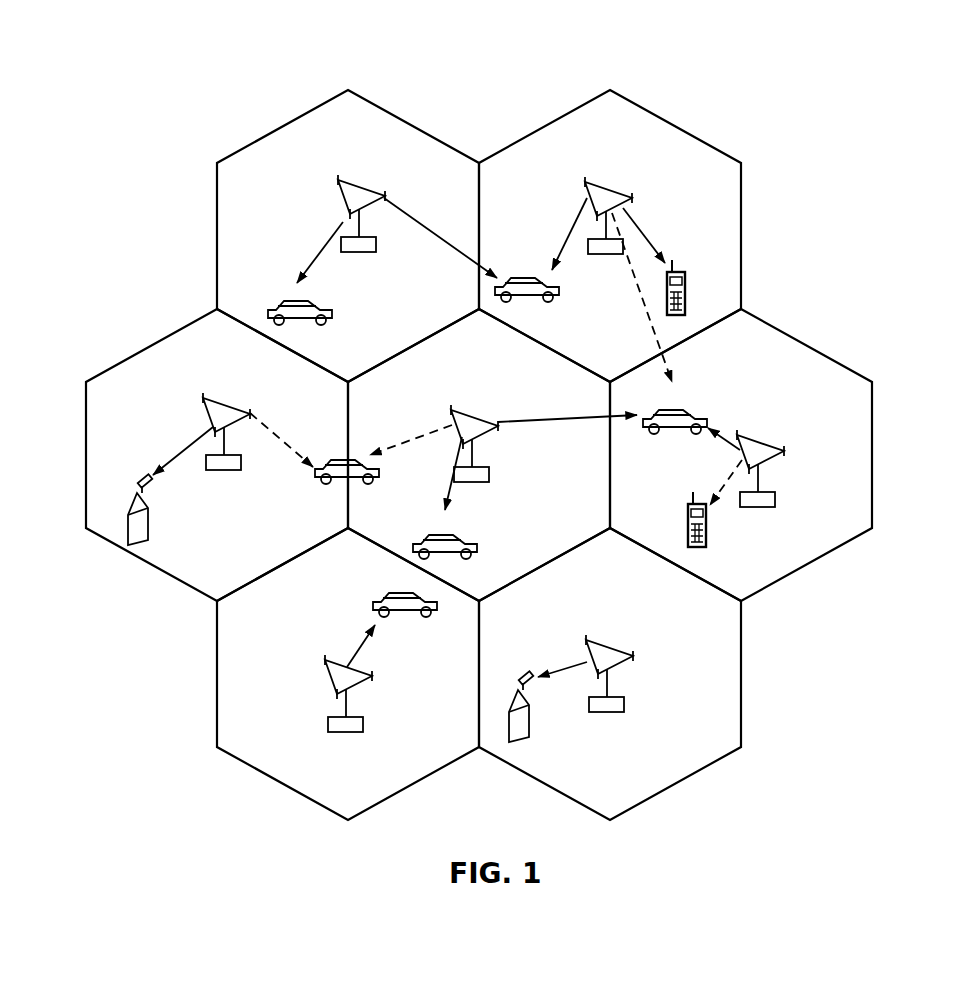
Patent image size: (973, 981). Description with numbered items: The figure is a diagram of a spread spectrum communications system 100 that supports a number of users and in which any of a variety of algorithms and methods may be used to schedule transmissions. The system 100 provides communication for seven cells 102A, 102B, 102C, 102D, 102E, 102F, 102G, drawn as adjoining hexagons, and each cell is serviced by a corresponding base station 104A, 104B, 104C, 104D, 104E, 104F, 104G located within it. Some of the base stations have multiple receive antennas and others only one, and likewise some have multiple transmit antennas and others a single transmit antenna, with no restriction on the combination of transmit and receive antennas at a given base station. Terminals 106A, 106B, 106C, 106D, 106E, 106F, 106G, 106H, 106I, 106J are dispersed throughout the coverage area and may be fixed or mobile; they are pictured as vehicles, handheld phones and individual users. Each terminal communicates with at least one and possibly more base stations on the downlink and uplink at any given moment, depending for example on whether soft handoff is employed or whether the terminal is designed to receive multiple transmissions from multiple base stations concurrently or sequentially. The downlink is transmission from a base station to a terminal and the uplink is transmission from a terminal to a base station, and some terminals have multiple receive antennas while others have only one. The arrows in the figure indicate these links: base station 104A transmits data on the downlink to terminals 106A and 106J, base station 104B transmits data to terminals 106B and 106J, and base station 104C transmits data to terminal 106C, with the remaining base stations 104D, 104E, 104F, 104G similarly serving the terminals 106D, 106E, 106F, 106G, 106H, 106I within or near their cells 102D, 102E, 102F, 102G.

The communications system 100 is at (797, 77).
The cell 102A is at (292, 120).
The cell 102B is at (670, 123).
The cell 102C is at (147, 348).
The cell 102D is at (514, 352).
The cell 102E is at (873, 457).
The cell 102F is at (218, 683).
The cell 102G is at (741, 654).
The base station 104A is at (346, 183).
The base station 104B is at (592, 185).
The base station 104C is at (212, 405).
The base station 104D is at (461, 414).
The base station 104E is at (746, 441).
The base station 104F is at (326, 663).
The base station 104G is at (597, 644).
The terminal 106A is at (296, 300).
The terminal 106B is at (671, 268).
The terminal 106C is at (141, 478).
The terminal 106D is at (445, 527).
The terminal 106E is at (680, 402).
The terminal 106F is at (400, 588).
The terminal 106G is at (525, 677).
The terminal 106H is at (338, 458).
The terminal 106I is at (687, 503).
The terminal 106J is at (530, 268).